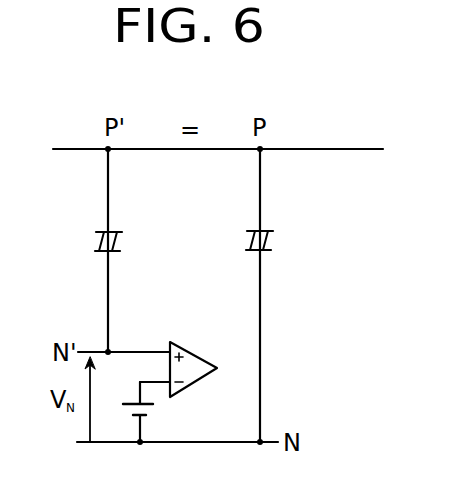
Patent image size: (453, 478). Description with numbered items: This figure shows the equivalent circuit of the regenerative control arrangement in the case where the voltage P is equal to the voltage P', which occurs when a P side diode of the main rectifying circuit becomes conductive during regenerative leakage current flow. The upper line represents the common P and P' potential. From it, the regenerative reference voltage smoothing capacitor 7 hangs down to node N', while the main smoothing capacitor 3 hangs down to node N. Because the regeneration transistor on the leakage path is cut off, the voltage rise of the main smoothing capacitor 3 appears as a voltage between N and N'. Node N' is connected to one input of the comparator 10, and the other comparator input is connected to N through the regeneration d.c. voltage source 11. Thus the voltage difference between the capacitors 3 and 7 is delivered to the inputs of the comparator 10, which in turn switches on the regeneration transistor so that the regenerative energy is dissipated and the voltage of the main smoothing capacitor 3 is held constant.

The regenerative reference voltage smoothing capacitor 7 is at (95, 244).
The main smoothing capacitor 3 is at (275, 243).
The comparator 10 is at (193, 350).
The regeneration d.c. voltage source 11 is at (150, 411).